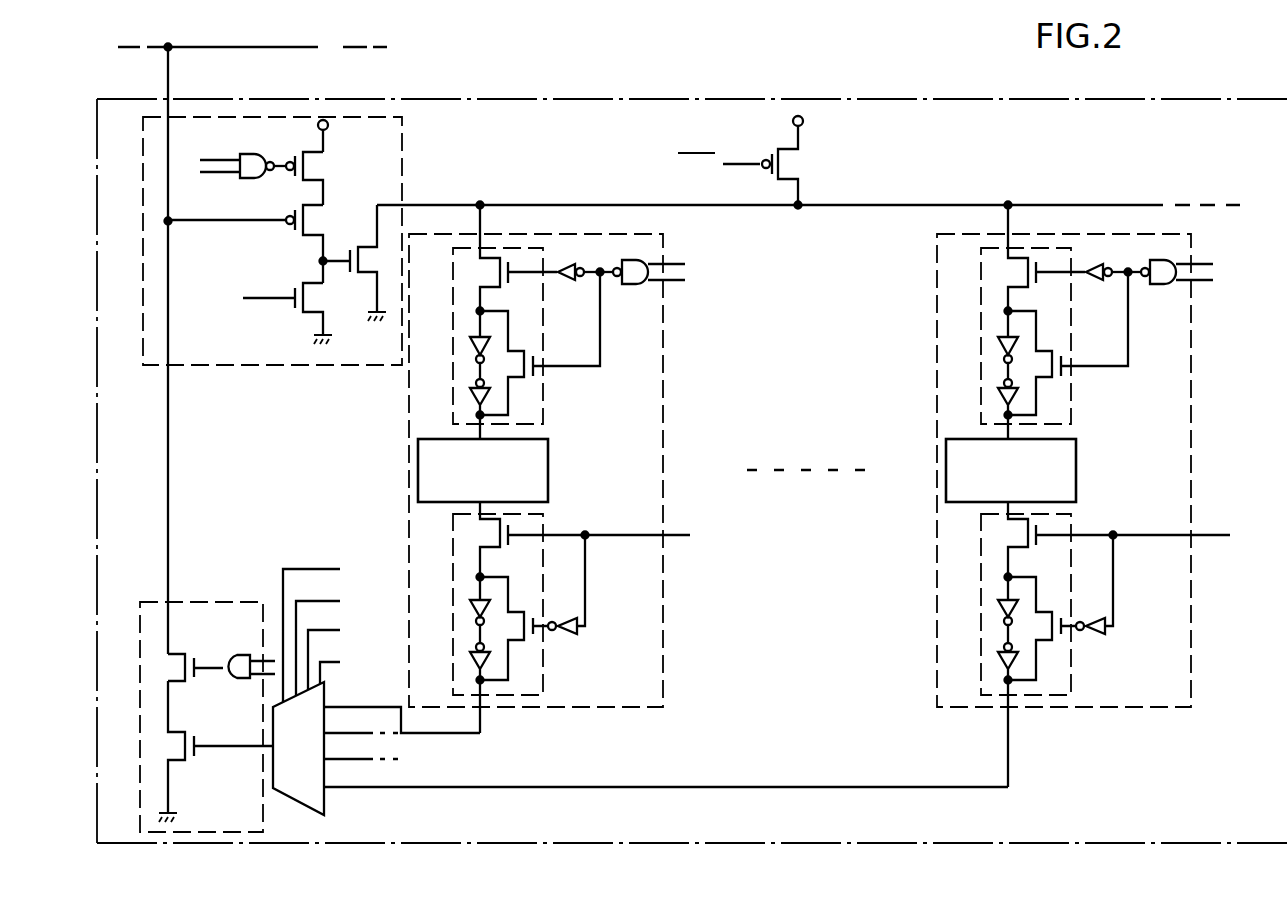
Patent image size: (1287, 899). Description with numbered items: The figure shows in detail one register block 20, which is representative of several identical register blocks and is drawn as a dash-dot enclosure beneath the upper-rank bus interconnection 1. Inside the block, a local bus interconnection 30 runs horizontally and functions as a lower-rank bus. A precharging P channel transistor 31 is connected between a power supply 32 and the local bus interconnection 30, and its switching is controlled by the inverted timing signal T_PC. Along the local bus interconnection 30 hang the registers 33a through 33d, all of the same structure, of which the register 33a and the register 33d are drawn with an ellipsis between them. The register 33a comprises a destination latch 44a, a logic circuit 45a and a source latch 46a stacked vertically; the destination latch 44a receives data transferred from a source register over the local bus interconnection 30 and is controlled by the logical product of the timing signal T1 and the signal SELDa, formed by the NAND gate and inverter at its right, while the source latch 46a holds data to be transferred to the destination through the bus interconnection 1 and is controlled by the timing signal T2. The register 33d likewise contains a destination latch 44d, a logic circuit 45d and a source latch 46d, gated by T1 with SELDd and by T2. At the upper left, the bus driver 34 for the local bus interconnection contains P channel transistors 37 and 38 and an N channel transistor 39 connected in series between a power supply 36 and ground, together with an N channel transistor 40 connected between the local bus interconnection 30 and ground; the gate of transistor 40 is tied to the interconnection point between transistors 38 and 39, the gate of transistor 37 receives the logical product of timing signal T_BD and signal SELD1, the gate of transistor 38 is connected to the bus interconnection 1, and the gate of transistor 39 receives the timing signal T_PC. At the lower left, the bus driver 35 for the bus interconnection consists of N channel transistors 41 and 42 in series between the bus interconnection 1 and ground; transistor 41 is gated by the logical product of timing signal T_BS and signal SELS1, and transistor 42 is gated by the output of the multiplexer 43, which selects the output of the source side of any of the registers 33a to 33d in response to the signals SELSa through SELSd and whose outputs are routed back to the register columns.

The bus interconnection 1 is at (319, 47).
The register block 20 is at (976, 99).
The local bus interconnection 30 is at (911, 203).
The precharging P channel transistor 31 is at (803, 166).
The power supply 32 is at (804, 119).
The register 33a is at (665, 370).
The register 33d is at (1066, 495).
The bus driver for local bus interconnection 34 is at (300, 241).
The bus driver for bus interconnection 35 is at (210, 686).
The power supply 36 is at (327, 131).
The P channel transistor 37 is at (316, 170).
The P channel transistor 38 is at (312, 221).
The N channel transistor 39 is at (312, 299).
The N channel transistor 40 is at (361, 260).
The N channel transistor 41 is at (179, 666).
The N channel transistor 42 is at (181, 746).
The multiplexer 43 is at (294, 797).
The destination latch 44a is at (545, 398).
The destination latch 44d is at (1059, 321).
The logic circuit 45a is at (551, 487).
The logic circuit 45d is at (1045, 470).
The source latch 46a is at (545, 667).
The source latch 46d is at (1105, 598).